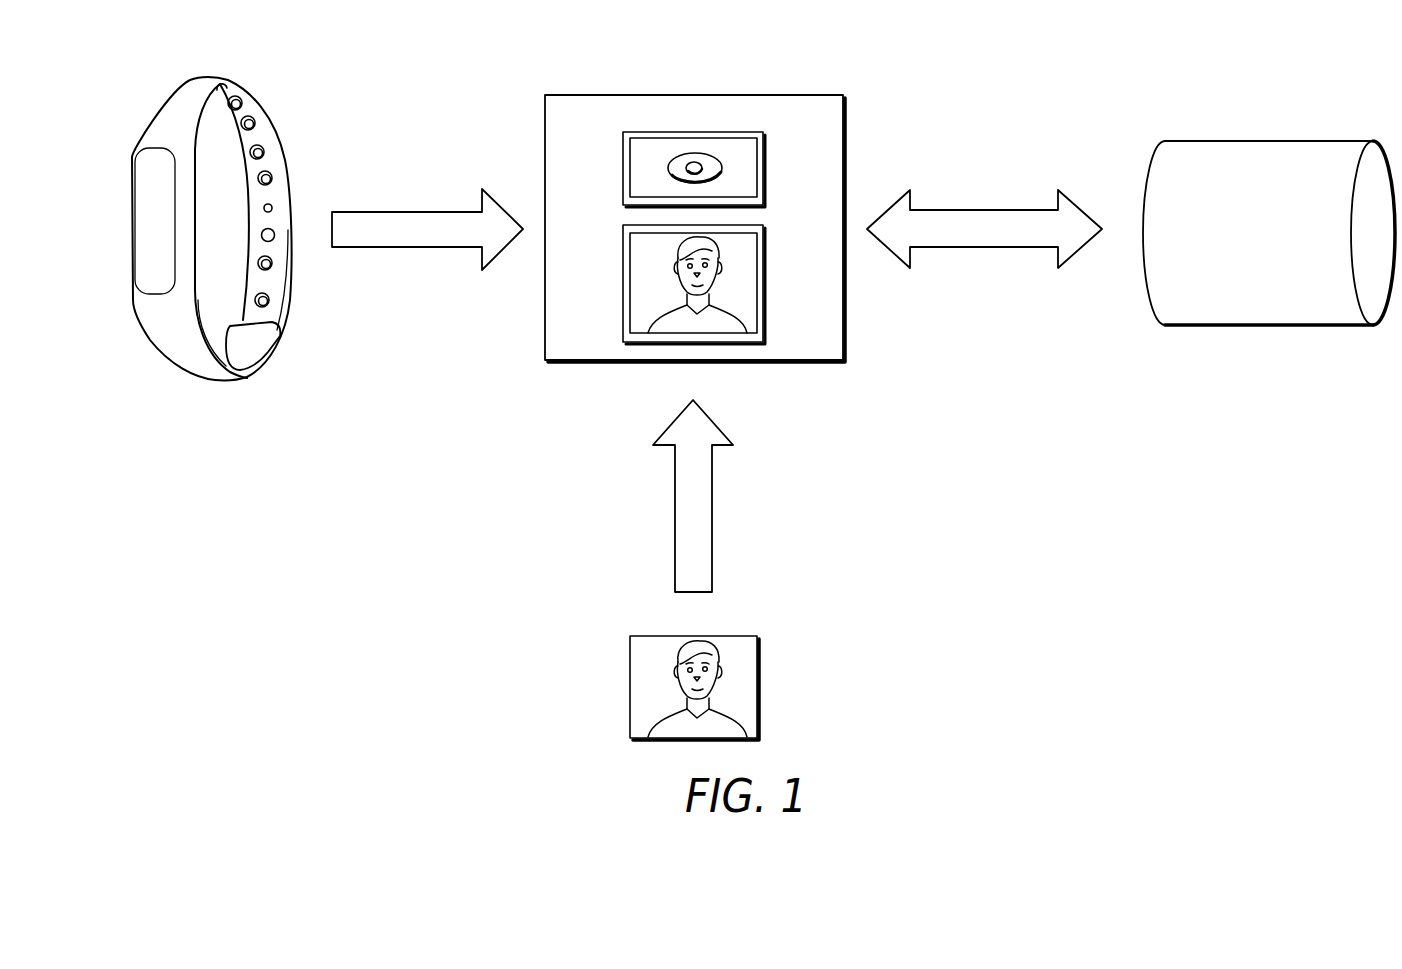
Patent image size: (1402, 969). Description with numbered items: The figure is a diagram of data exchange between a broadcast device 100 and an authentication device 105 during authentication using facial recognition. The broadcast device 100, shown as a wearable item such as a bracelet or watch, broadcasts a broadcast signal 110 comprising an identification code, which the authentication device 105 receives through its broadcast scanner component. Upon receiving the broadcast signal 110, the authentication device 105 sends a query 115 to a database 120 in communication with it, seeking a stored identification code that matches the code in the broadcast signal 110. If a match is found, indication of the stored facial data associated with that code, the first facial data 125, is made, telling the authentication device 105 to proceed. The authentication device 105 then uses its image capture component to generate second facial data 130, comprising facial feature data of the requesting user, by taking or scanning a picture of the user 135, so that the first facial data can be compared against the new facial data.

The broadcast device 100 is at (205, 380).
The authentication device 105 is at (693, 95).
The broadcast signal 110 is at (418, 247).
The query 115 is at (1016, 209).
The database 120 is at (1281, 327).
The first facial data 125 is at (950, 247).
The second facial data 130 is at (675, 518).
The picture of the user 135 is at (630, 685).